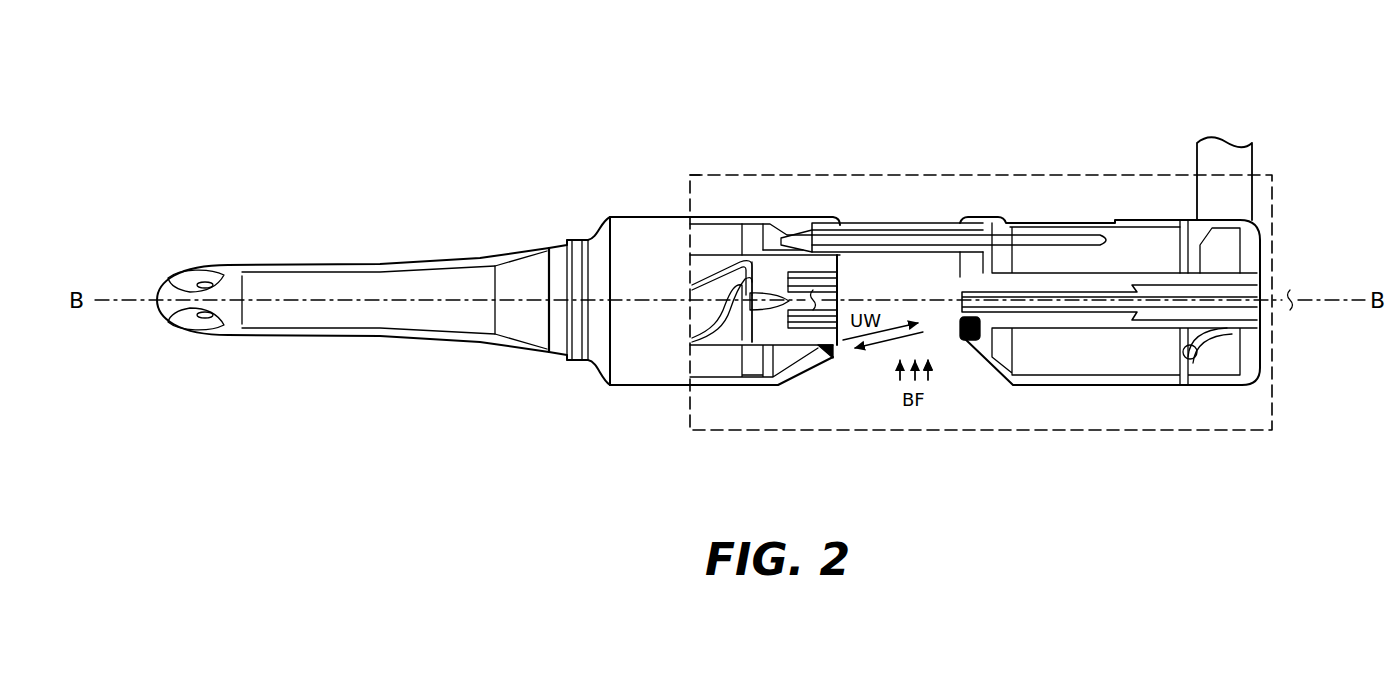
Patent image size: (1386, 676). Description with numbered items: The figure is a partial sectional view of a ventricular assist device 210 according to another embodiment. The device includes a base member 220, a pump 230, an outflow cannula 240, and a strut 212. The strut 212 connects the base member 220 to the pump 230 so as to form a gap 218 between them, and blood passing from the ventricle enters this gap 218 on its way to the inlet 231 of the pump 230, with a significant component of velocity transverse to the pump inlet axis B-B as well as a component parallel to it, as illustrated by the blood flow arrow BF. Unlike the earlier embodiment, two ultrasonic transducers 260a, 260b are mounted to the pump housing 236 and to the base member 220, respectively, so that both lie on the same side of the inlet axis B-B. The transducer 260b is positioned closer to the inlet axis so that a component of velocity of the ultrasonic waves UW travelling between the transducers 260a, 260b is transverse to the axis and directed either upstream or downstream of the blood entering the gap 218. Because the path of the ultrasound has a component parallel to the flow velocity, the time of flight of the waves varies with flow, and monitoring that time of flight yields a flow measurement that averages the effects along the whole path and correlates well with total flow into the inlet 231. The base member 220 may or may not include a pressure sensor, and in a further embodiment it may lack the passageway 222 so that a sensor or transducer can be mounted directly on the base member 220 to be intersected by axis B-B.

The surgical instrument / ultrasonic tool assembly 210 is at (677, 90).
The strut 212 is at (908, 223).
The gap 218 is at (924, 272).
The base member 220 is at (1051, 203).
The passageway 222 is at (1257, 303).
The pump 230 is at (646, 204).
The inlet 231 is at (838, 262).
The pump housing 236 is at (624, 387).
The outflow cannula 240 is at (351, 220).
The ultrasonic transducer 260a is at (828, 357).
The ultrasonic transducer 260b is at (953, 338).